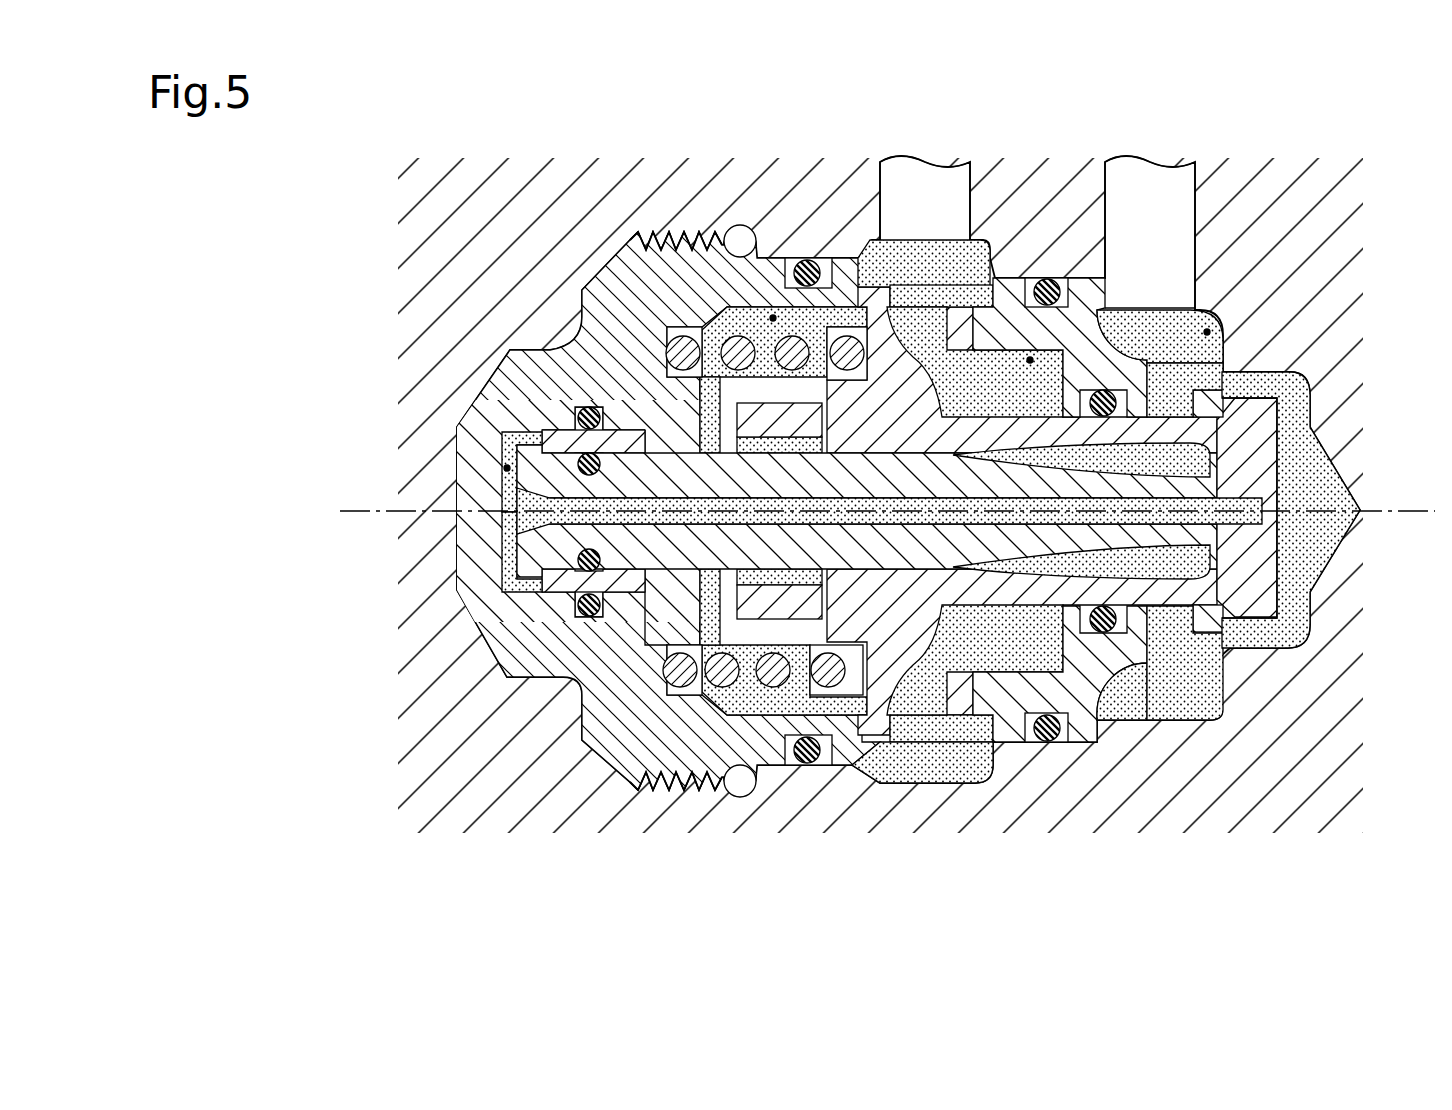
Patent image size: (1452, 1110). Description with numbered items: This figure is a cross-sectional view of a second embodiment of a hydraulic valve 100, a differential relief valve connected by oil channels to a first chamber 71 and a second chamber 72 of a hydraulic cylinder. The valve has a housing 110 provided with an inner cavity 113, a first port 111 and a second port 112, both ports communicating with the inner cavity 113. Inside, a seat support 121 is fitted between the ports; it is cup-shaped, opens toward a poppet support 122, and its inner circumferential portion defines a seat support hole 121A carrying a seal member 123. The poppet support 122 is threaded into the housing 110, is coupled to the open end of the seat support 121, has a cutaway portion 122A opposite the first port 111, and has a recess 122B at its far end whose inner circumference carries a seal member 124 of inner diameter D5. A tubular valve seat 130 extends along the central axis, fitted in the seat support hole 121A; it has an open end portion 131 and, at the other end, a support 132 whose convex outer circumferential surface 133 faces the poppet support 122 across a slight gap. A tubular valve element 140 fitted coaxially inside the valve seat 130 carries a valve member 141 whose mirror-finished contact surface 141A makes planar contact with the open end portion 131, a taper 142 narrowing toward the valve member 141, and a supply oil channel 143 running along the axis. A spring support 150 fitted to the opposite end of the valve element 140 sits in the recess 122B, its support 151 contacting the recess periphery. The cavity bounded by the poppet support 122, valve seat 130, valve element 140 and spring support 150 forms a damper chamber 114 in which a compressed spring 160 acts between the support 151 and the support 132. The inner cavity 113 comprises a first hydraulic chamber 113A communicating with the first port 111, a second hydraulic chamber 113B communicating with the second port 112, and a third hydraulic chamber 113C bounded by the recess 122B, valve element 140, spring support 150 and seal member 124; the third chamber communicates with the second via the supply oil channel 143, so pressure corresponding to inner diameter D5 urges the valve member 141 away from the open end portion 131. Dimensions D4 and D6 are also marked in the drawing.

The hydraulic valve 100 is at (369, 115).
The housing 110 is at (483, 192).
The first port 111 is at (922, 179).
The second port 112 is at (1146, 214).
The inner cavity 113 is at (753, 312).
The first hydraulic chamber 113A is at (1075, 340).
The second hydraulic chamber 113B is at (1167, 308).
The third hydraulic chamber 113C is at (505, 468).
The damper chamber 114 is at (773, 316).
The seat support 121 is at (1010, 278).
The seat support hole 121A is at (1150, 408).
The poppet support 122 is at (598, 270).
The cutaway portion 122A is at (914, 293).
The recess 122B is at (503, 583).
The seal member 123 is at (1128, 655).
The seal member 124 is at (590, 650).
The valve seat 130 is at (1000, 612).
The open end portion 131 is at (1200, 628).
The support 132 is at (897, 660).
The outer circumferential surface 133 is at (890, 732).
The valve element 140 is at (867, 573).
The valve member 141 is at (1263, 422).
The contact surface 141A is at (1233, 620).
The taper 142 is at (1005, 575).
The supply oil channel 143 is at (508, 518).
The spring support 150 is at (643, 653).
The support 151 is at (655, 692).
The spring 160 is at (760, 688).
The first chamber 71 is at (928, 136).
The second chamber 72 is at (1154, 136).
The diameter D4 is at (1248, 423).
The inner diameter D5 is at (665, 585).
The diameter D6 is at (1108, 591).